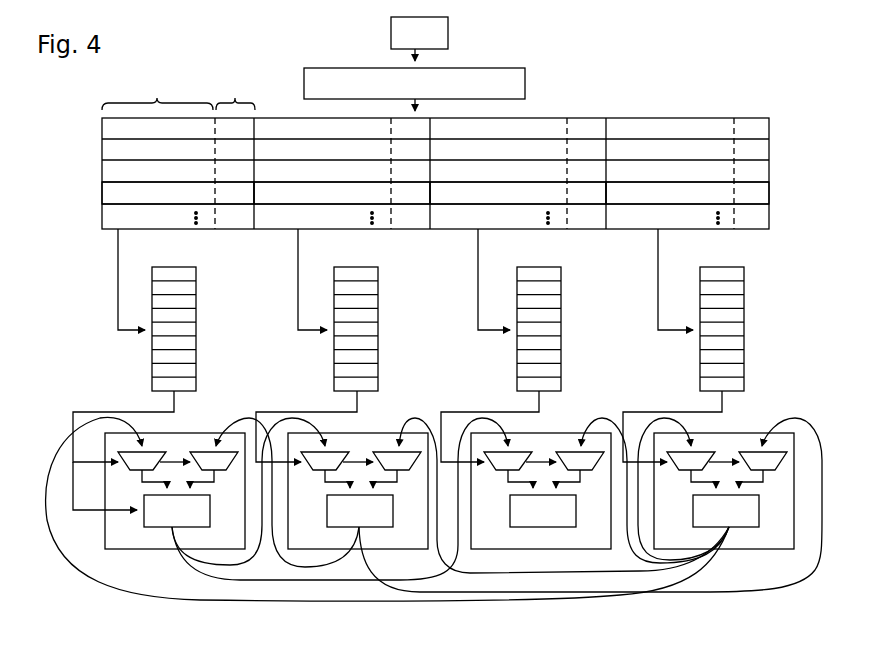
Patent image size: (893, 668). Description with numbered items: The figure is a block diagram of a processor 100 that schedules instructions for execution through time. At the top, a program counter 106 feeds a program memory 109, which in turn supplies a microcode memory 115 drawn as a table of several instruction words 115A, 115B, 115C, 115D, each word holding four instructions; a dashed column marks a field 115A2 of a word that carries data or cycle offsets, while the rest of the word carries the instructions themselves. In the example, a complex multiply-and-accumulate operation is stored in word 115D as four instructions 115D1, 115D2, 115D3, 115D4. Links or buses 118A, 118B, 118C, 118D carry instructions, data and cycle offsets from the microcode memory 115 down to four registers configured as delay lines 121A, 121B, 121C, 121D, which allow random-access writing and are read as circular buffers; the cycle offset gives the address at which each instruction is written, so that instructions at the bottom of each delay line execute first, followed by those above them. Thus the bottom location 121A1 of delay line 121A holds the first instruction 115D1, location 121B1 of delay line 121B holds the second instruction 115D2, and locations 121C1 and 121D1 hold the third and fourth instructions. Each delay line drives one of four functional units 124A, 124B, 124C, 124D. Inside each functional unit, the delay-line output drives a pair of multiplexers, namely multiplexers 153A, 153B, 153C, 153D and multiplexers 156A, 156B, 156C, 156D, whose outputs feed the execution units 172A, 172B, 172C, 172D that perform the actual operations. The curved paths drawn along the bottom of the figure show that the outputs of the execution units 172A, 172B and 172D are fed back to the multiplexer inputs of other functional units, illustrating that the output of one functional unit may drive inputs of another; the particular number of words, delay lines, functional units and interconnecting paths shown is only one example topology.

The processor 100 is at (655, 60).
The program counter 106 is at (448, 32).
The program memory 109 is at (525, 80).
The microcode memory 115 is at (716, 117).
The word 115A is at (793, 132).
The field 115A2 is at (473, 154).
The word 115B is at (770, 150).
The word 115C is at (770, 170).
The word 115D is at (770, 193).
The instruction 115D1 is at (176, 201).
The instruction 115D2 is at (350, 201).
The instruction 115D3 is at (517, 201).
The instruction 115D4 is at (692, 201).
The link or bus 118A is at (117, 245).
The link or bus 118B is at (297, 267).
The link or bus 118C is at (477, 270).
The link or bus 118D is at (657, 270).
The delay line 121A is at (190, 266).
The delay line 121B is at (372, 266).
The delay line 121C is at (555, 266).
The delay line 121D is at (738, 266).
The location 121A1 is at (196, 386).
The location 121B1 is at (378, 386).
The location 121C1 is at (561, 386).
The location 121D1 is at (744, 386).
The functional unit 124A is at (146, 546).
The functional unit 124B is at (329, 546).
The functional unit 124C is at (511, 546).
The functional unit 124D is at (694, 546).
The multiplexer 153A is at (155, 452).
The multiplexer 153B is at (340, 452).
The multiplexer 153C is at (520, 452).
The multiplexer 153D is at (703, 452).
The multiplexer 156A is at (219, 447).
The multiplexer 156B is at (401, 447).
The multiplexer 156C is at (583, 447).
The multiplexer 156D is at (765, 447).
The execution unit 172A is at (159, 521).
The execution unit 172B is at (342, 521).
The execution unit 172C is at (525, 521).
The execution unit 172D is at (708, 521).